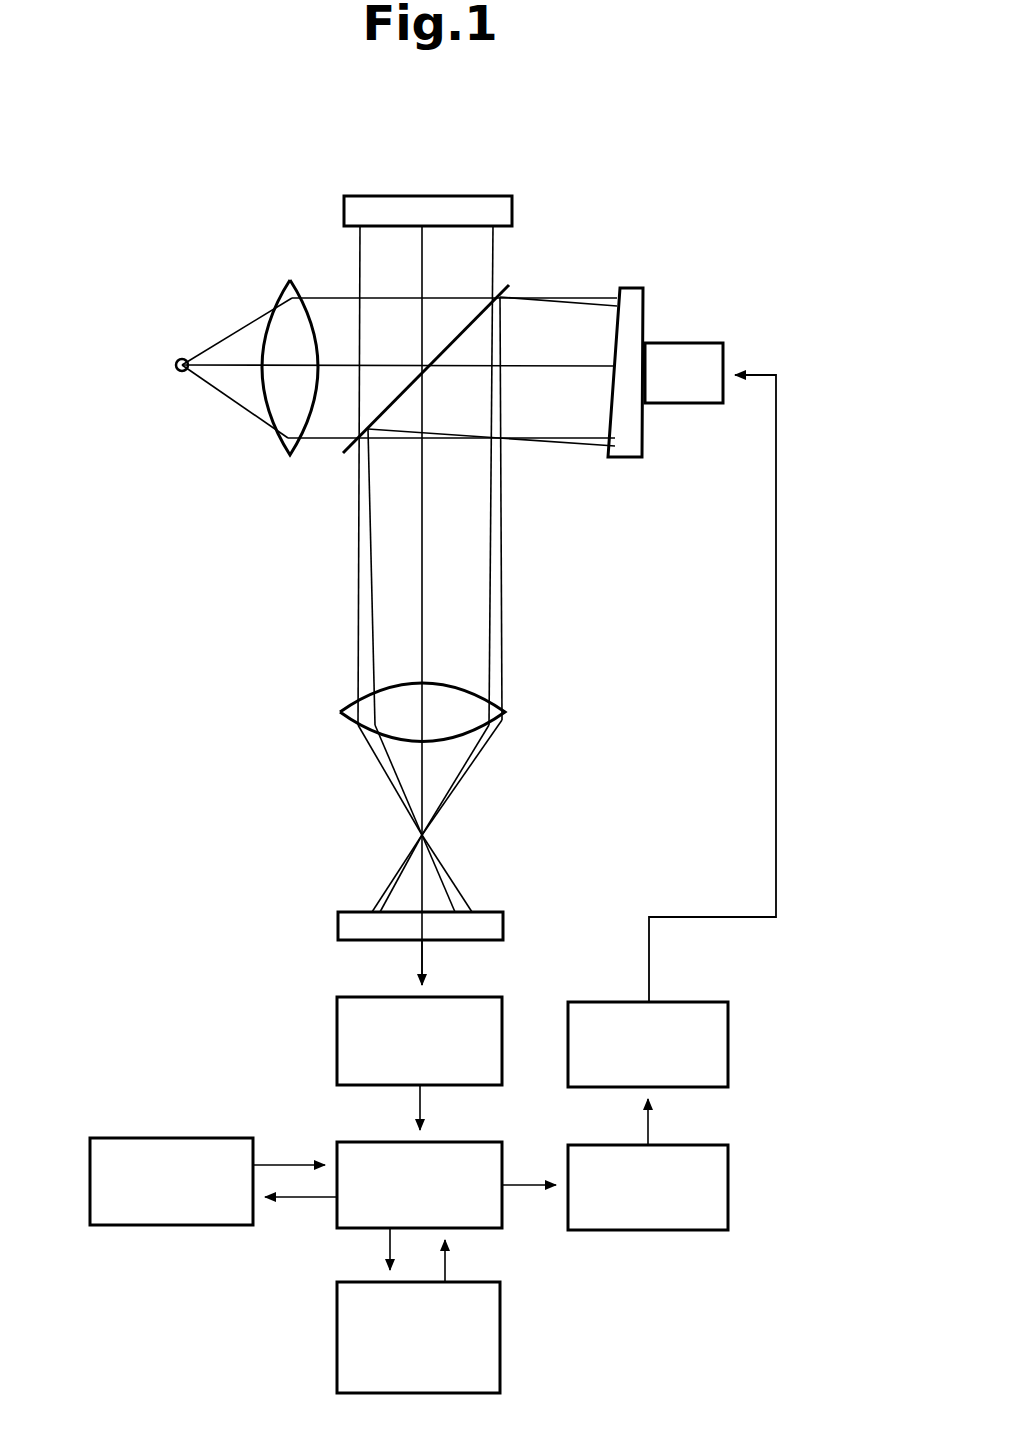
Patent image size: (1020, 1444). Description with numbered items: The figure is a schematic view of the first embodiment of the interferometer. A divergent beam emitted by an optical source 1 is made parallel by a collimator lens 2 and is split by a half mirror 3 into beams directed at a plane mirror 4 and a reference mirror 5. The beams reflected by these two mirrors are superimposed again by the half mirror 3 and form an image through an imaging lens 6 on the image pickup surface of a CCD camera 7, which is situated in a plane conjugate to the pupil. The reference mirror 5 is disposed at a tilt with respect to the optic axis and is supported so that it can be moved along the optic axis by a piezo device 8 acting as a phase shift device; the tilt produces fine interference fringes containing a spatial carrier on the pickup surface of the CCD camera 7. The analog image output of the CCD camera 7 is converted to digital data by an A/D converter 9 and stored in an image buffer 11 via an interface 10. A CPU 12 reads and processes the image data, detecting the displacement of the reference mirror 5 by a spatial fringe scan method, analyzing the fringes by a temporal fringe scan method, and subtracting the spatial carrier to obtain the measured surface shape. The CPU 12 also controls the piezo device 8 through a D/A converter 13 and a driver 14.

The optical source 1 is at (181, 359).
The collimator lens 2 is at (288, 445).
The half mirror 3 is at (507, 286).
The plane mirror 4 is at (512, 210).
The reference mirror 5 is at (631, 288).
The imaging lens 6 is at (505, 712).
The CCD camera 7 is at (503, 925).
The piezo device 8 is at (695, 343).
The A/D converter 9 is at (502, 1010).
The interface 10 is at (502, 1155).
The image buffer 11 is at (253, 1150).
The CPU 12 is at (500, 1296).
The D/A converter 13 is at (728, 1158).
The driver 14 is at (728, 1013).